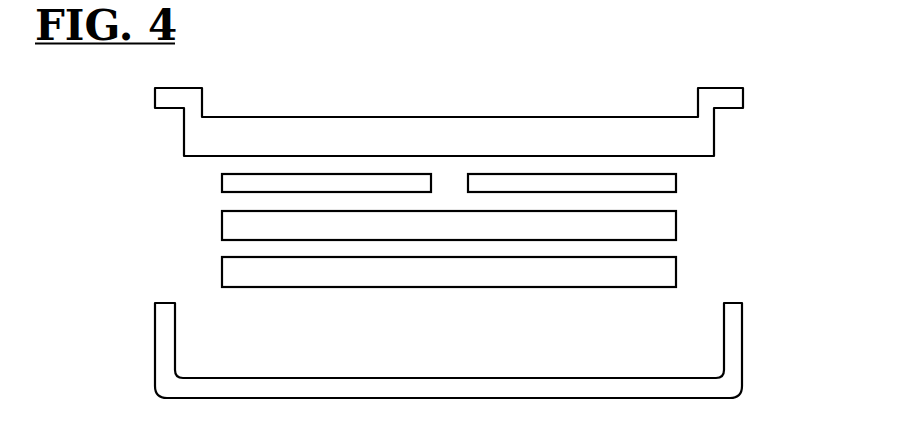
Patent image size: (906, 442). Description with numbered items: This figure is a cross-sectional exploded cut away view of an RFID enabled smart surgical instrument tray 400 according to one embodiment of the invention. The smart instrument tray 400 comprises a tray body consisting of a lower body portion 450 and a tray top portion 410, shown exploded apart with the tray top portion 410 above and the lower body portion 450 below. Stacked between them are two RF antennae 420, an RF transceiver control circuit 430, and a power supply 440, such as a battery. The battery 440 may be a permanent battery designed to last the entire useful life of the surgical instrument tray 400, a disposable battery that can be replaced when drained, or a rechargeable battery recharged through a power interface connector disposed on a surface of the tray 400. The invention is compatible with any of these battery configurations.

The RFID enabled smart surgical instrument tray 400 is at (449, 222).
The tray top portion 410 is at (741, 89).
The RF antennae 420 is at (222, 187).
The RF transceiver control circuit 430 is at (676, 227).
The power supply 440 is at (523, 288).
The lower body portion 450 is at (742, 367).